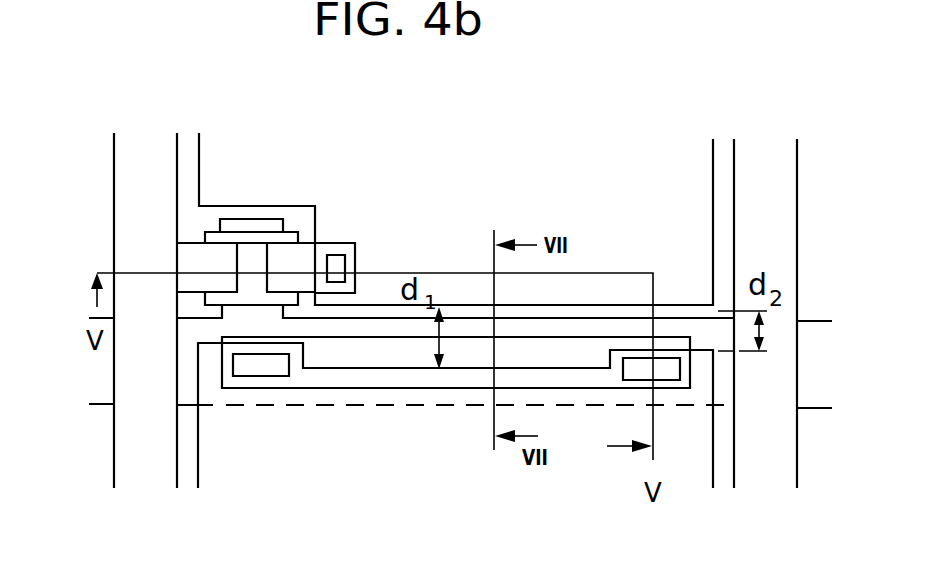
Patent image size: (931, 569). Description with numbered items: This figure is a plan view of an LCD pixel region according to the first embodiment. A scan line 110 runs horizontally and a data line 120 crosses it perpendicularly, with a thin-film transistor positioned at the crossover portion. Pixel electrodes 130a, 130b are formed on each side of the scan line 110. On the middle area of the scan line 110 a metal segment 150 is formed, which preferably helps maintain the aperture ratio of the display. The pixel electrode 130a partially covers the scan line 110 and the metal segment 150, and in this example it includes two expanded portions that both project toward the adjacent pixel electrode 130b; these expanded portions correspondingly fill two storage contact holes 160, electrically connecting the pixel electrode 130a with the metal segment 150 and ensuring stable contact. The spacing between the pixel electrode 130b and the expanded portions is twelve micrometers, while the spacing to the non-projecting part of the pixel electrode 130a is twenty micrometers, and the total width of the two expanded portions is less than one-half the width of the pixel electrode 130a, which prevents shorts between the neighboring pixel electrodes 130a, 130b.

The scan line 110 is at (99, 365).
The data line 120 is at (130, 229).
The pixel electrode 130a is at (443, 475).
The pixel electrode 130b is at (388, 238).
The metal segment 150 is at (367, 357).
The storage contact hole 160 is at (669, 372).